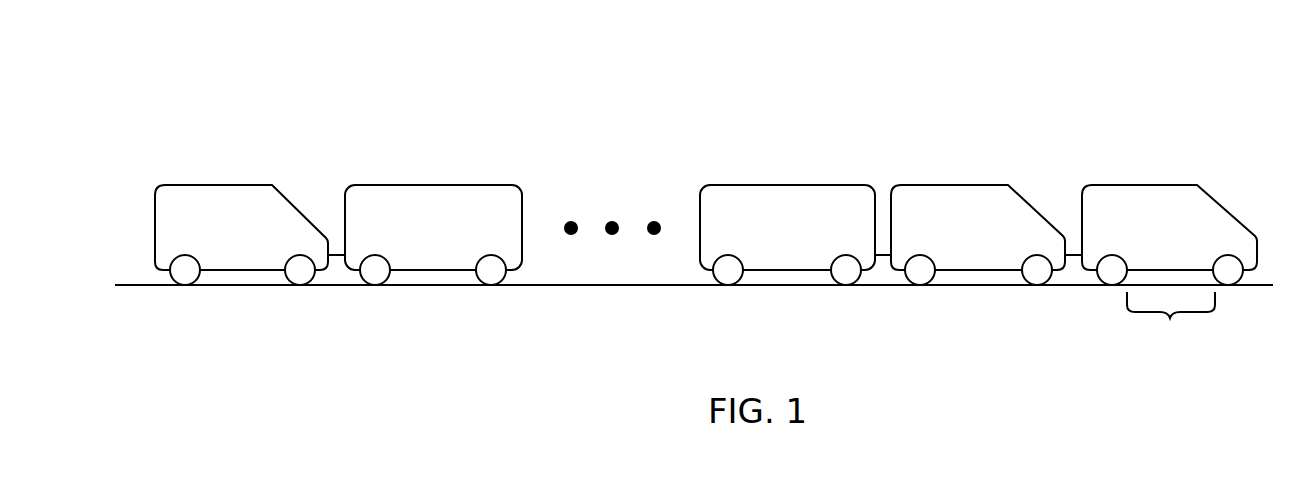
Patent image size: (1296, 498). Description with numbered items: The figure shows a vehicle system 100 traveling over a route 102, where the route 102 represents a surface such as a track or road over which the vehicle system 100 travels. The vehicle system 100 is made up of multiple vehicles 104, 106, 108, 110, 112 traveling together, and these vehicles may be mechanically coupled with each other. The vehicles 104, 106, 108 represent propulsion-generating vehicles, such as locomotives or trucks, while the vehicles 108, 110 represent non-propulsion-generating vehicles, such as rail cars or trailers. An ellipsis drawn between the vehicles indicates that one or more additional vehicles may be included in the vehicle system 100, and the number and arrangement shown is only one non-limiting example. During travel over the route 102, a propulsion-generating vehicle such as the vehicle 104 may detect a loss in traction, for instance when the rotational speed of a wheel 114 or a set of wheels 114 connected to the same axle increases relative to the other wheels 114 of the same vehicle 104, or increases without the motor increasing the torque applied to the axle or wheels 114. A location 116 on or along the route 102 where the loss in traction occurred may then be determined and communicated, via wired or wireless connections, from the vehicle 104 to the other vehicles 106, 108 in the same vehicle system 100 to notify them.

The vehicle system 100 is at (1260, 125).
The route 102 is at (619, 285).
The vehicle 104 is at (1169, 239).
The vehicle 106 is at (951, 185).
The vehicle 108 is at (223, 185).
The vehicle 110 is at (788, 185).
The vehicle 112 is at (438, 185).
The wheel 114 is at (1227, 276).
The location 116 is at (1171, 327).